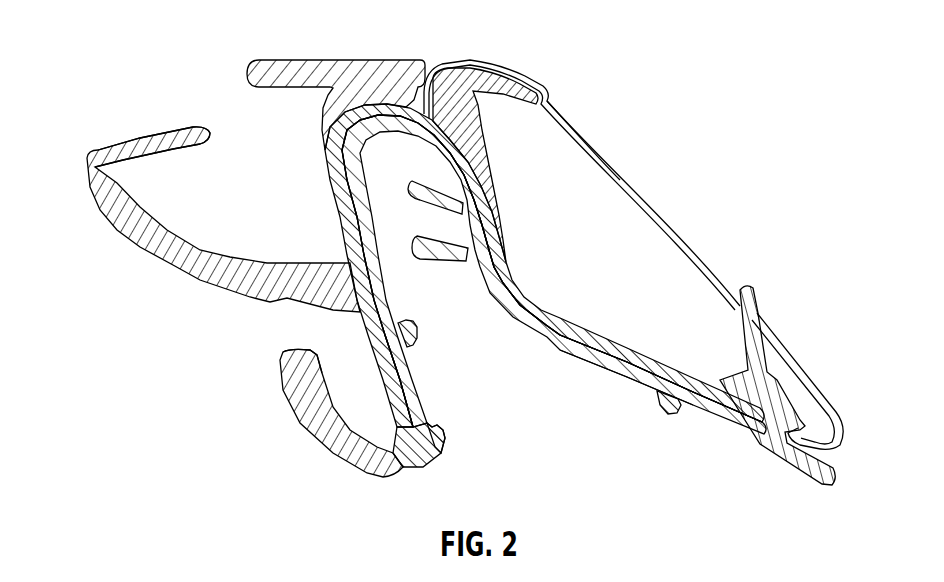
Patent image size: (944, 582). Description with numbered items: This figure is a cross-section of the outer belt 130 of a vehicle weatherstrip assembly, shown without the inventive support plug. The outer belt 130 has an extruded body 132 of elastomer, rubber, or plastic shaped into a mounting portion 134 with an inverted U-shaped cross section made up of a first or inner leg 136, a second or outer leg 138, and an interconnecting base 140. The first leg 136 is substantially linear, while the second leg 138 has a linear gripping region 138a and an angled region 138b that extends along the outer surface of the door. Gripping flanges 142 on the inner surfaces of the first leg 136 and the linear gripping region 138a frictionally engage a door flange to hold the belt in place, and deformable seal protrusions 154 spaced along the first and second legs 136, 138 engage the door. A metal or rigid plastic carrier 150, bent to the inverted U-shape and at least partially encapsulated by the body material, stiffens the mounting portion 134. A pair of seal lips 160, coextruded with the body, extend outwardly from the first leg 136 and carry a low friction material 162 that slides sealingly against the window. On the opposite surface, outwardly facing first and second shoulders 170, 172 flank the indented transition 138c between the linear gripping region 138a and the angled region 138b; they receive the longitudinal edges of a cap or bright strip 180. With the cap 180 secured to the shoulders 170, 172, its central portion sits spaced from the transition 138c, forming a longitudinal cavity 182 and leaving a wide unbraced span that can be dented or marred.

The outer belt 130 is at (780, 120).
The body 132 is at (372, 203).
The mounting portion 134 is at (333, 213).
The first leg 136 is at (377, 358).
The second leg 138 is at (508, 258).
The linear gripping region 138a is at (493, 222).
The angled region 138b is at (638, 352).
The transition 138c is at (517, 293).
The interconnecting base 140 is at (420, 60).
The gripping flanges 142 is at (343, 178).
The carrier 150 is at (635, 380).
The deformable seal protrusions 154 is at (417, 330).
The seal lips 160 is at (157, 147).
The low friction material 162 is at (190, 273).
The first shoulder 170 is at (330, 67).
The second shoulder 172 is at (765, 398).
The cap 180 is at (700, 253).
The cavity 182 is at (540, 143).